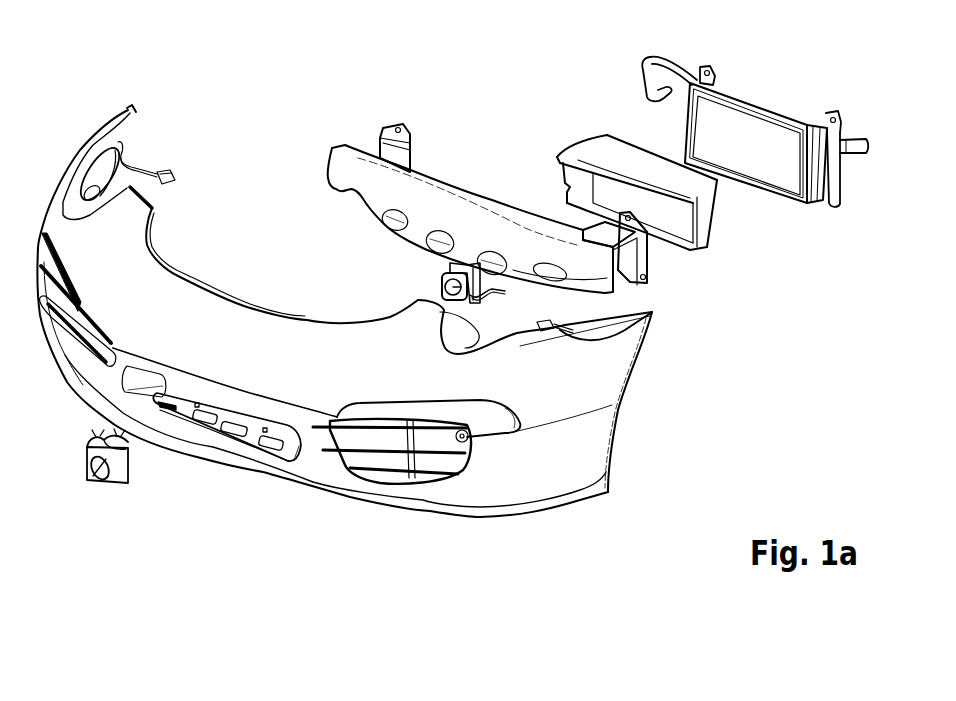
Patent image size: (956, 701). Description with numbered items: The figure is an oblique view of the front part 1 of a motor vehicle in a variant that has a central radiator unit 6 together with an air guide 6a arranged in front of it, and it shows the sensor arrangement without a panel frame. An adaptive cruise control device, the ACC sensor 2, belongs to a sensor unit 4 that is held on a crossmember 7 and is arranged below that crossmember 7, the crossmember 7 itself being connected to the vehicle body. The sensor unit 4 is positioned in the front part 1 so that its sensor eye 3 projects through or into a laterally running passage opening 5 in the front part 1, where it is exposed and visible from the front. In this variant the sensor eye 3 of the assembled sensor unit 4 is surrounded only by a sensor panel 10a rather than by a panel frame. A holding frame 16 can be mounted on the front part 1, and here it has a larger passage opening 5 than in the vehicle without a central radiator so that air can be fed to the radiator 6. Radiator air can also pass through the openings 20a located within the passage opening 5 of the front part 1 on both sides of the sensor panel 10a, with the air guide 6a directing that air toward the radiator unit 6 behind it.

The front part 1 is at (603, 377).
The ACC sensor 2 is at (428, 287).
The sensor eye 3 is at (485, 296).
The sensor unit 4 is at (447, 275).
The passage opening 5 is at (230, 440).
The central radiator unit 6 is at (773, 92).
The air guide 6a is at (596, 125).
The crossmember 7 is at (474, 188).
The sensor panel 10a is at (113, 482).
The holding frame 16 is at (281, 452).
The openings 20a is at (180, 407).